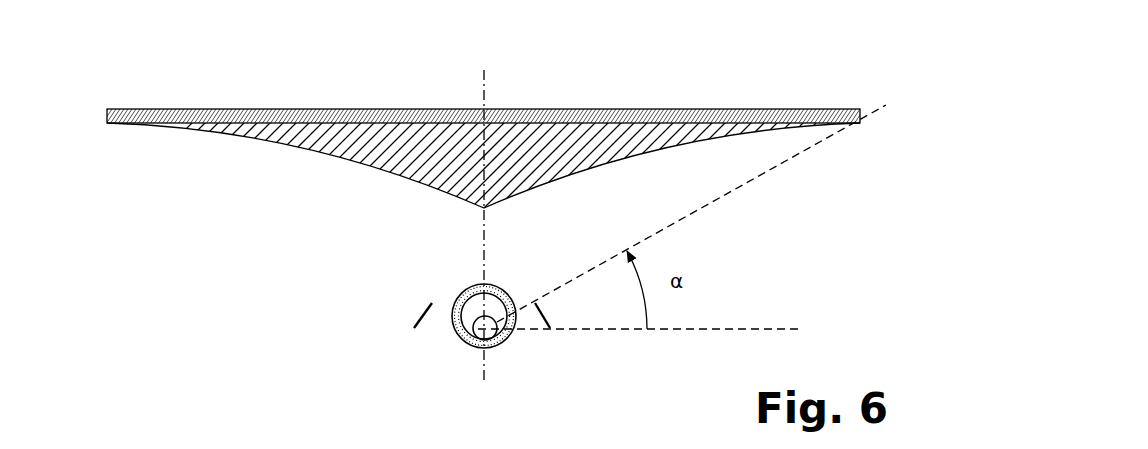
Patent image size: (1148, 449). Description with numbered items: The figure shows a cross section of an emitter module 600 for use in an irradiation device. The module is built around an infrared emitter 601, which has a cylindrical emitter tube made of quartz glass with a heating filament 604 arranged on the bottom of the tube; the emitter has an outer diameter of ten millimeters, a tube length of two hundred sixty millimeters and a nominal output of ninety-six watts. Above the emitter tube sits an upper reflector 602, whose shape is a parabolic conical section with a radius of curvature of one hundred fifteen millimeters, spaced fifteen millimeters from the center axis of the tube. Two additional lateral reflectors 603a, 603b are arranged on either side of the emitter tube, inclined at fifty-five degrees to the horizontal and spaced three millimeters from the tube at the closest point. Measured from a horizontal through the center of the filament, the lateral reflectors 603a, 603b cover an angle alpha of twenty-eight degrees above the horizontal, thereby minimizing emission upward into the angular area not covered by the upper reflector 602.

The emitter module 600 is at (758, 70).
The infrared emitter 601 is at (502, 352).
The upper reflector 602 is at (267, 108).
The lateral reflector 603a is at (414, 328).
The lateral reflector 603b is at (550, 328).
The heating filament 604 is at (472, 337).